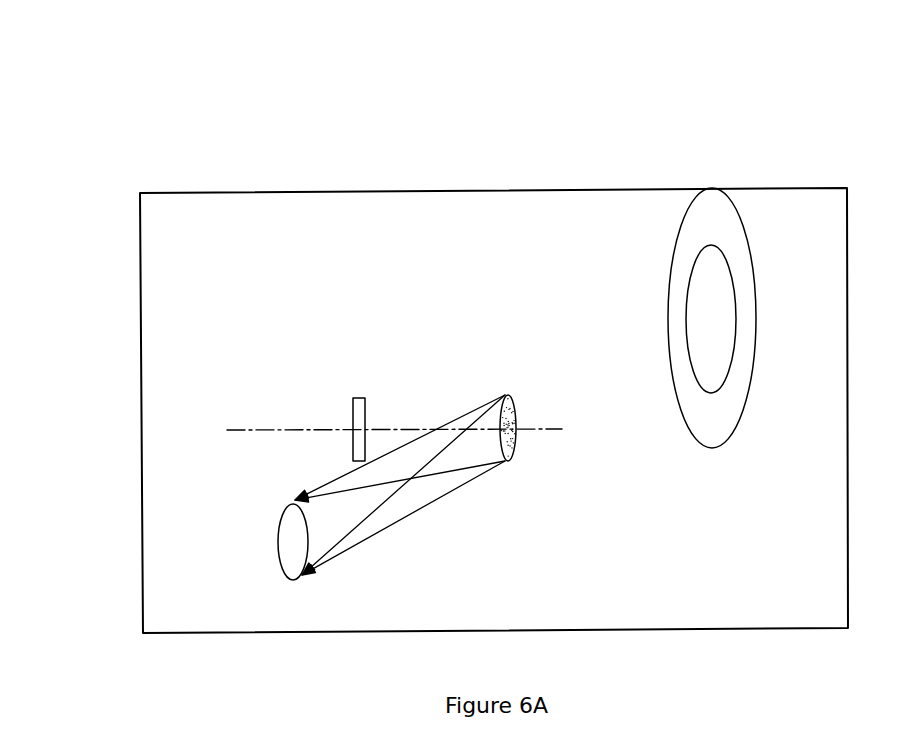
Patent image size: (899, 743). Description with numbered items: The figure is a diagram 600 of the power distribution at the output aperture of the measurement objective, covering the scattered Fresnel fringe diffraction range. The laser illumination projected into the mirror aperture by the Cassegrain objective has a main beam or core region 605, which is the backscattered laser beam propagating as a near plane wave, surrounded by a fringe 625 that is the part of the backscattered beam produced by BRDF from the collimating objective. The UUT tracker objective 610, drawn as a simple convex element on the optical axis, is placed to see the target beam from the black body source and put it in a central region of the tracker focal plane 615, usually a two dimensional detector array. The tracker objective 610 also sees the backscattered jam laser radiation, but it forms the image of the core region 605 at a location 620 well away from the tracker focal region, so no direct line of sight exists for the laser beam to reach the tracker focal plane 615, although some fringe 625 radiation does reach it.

The diagram 600 is at (48, 49).
The core region 605 is at (691, 245).
The UUT tracker objective 610 is at (506, 382).
The tracker focal plane 615 is at (341, 391).
The image of the core region 620 is at (332, 589).
The fringe 625 is at (736, 454).